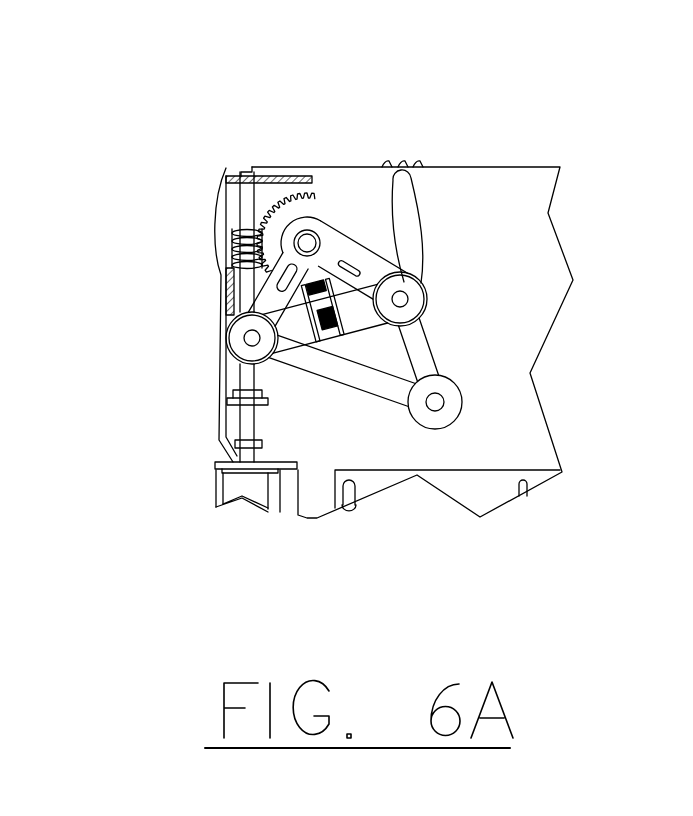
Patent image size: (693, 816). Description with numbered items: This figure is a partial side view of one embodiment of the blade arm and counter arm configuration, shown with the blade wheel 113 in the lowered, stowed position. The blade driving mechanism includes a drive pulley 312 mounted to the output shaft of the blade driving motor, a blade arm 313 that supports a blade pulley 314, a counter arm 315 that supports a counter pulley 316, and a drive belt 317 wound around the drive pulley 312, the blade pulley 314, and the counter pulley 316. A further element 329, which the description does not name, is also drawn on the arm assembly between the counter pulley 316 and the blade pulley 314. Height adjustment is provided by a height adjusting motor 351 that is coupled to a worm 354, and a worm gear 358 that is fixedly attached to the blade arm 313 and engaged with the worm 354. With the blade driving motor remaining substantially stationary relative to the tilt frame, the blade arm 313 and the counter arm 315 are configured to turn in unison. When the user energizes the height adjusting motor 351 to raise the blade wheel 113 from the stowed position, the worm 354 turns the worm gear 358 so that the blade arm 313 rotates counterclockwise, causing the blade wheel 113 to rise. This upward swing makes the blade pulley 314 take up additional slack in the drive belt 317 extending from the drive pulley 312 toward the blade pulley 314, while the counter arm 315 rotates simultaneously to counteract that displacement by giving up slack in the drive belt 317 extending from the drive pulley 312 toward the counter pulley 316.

The blade wheel 113 is at (397, 162).
The worm gear 358 is at (278, 222).
The worm 354 is at (238, 250).
The counter arm 315 is at (227, 290).
The bolt assembly 329 is at (305, 322).
The counter pulley 316 is at (235, 342).
The drive belt 317 is at (347, 388).
The height adjusting motor 351 is at (237, 485).
The blade arm 313 is at (357, 255).
The blade pulley 314 is at (417, 302).
The drive pulley 312 is at (453, 408).